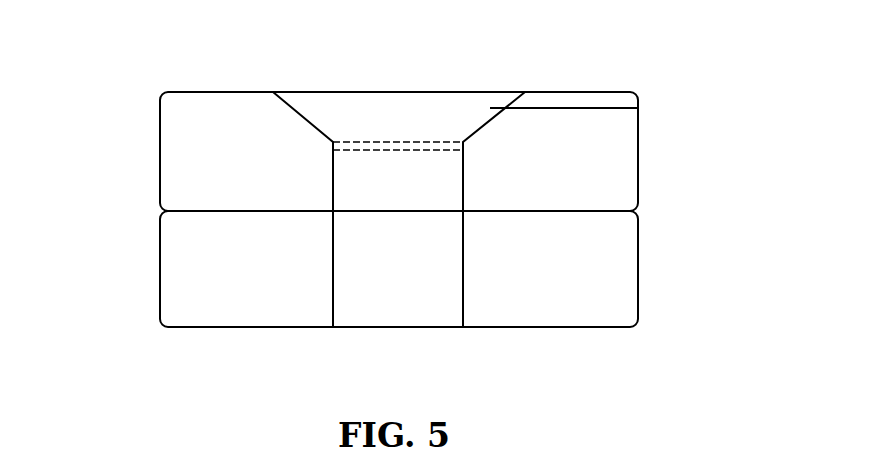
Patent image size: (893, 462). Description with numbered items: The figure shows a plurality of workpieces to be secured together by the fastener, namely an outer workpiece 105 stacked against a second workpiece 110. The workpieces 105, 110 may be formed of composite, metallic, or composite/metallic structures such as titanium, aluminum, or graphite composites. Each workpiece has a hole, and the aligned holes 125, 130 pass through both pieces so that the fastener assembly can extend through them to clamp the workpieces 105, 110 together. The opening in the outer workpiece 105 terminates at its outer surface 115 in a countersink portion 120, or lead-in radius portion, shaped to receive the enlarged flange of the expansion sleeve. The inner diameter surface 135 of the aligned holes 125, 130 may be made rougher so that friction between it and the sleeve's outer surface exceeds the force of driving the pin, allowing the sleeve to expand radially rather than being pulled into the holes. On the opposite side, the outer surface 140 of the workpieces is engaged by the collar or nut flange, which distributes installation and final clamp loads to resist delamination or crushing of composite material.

The outer workpiece 105 is at (221, 112).
The workpiece 110 is at (202, 269).
The outer surface 115 is at (560, 92).
The countersink portion 120 is at (638, 108).
The aligned hole 125 is at (365, 110).
The aligned hole 130 is at (437, 267).
The inner diameter surface 135 is at (347, 180).
The outer surface 140 is at (544, 337).